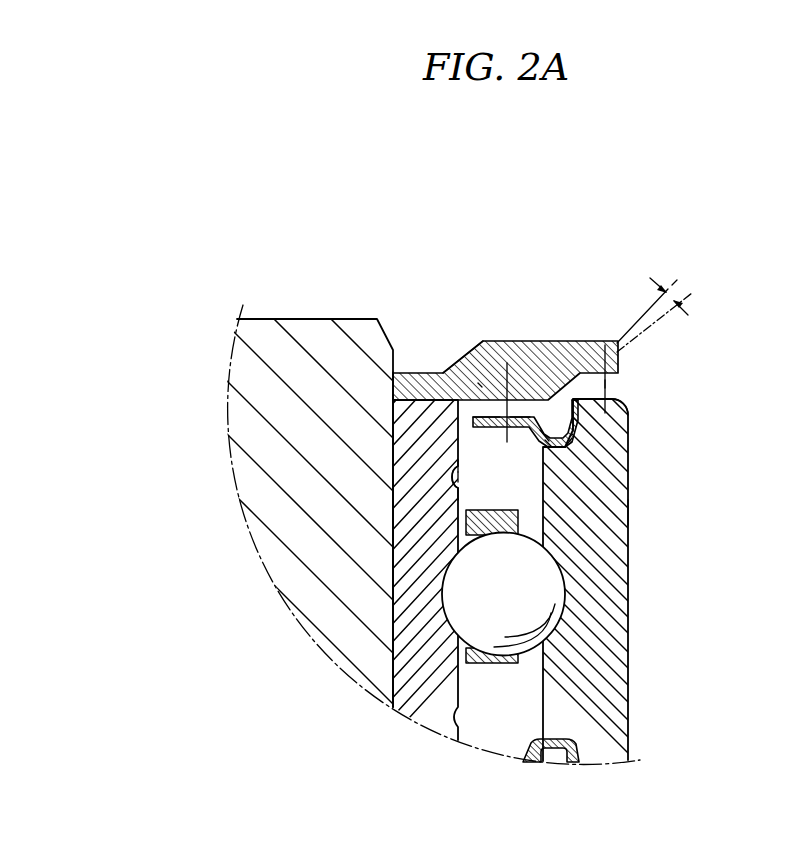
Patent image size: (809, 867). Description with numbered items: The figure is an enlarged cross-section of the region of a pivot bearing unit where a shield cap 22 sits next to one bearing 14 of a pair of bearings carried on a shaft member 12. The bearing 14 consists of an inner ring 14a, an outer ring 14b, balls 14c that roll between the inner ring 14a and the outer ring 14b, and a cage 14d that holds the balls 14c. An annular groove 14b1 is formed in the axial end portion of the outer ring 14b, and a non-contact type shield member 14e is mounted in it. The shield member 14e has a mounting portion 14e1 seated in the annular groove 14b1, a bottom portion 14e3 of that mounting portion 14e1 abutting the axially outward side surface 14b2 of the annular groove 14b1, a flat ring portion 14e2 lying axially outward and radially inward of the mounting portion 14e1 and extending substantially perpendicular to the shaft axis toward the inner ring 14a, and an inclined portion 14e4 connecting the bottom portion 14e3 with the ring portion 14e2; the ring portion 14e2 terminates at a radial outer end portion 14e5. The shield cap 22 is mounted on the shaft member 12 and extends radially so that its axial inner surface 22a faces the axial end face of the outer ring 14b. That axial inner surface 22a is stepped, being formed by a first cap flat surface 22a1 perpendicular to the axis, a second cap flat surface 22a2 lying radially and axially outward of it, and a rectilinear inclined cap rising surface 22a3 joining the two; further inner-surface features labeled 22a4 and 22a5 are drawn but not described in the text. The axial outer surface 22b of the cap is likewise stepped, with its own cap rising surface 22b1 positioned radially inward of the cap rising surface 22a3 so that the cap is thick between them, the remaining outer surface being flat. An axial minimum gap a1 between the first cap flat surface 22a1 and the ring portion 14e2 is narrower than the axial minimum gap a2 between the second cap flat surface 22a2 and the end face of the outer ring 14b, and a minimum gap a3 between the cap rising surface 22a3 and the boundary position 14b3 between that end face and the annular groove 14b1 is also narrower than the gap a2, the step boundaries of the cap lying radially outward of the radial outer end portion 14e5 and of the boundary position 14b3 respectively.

The shaft member 12 is at (268, 352).
The bearing 14 is at (634, 573).
The inner ring 14a is at (458, 708).
The outer ring 14b is at (607, 660).
The annular groove 14b1 is at (590, 458).
The axially outward side surface 14b2 is at (622, 512).
The boundary position 14b3 is at (630, 412).
The ball 14c is at (537, 588).
The cage 14d is at (518, 516).
The shield member 14e is at (393, 372).
The mounting portion 14e1 is at (462, 470).
The ring portion 14e2 is at (458, 466).
The bottom portion 14e3 is at (462, 492).
The inclined portion 14e4 is at (462, 470).
The radial outer end portion 14e5 is at (550, 442).
The shield cap 22 is at (611, 338).
The axial inner surface 22a is at (540, 425).
The first cap flat surface 22a1 is at (500, 405).
The second cap flat surface 22a2 is at (578, 405).
The cap rising surface 22a3 is at (549, 432).
The seal lip 22a4 is at (522, 415).
The seal core portion 22a5 is at (572, 425).
The axial outer surface 22b is at (486, 338).
The cap rising surface 22b1 is at (462, 357).
The axial minimum gap a1 is at (480, 385).
The axial minimum gap a2 is at (606, 384).
The minimum gap a3 is at (682, 290).